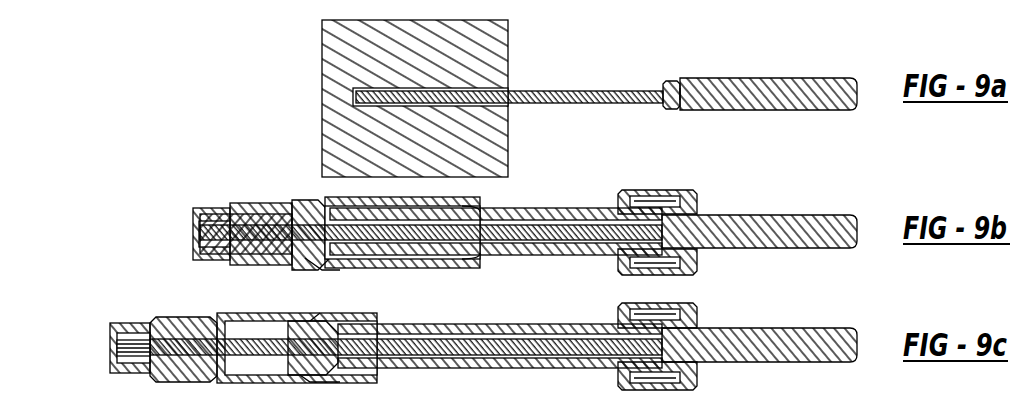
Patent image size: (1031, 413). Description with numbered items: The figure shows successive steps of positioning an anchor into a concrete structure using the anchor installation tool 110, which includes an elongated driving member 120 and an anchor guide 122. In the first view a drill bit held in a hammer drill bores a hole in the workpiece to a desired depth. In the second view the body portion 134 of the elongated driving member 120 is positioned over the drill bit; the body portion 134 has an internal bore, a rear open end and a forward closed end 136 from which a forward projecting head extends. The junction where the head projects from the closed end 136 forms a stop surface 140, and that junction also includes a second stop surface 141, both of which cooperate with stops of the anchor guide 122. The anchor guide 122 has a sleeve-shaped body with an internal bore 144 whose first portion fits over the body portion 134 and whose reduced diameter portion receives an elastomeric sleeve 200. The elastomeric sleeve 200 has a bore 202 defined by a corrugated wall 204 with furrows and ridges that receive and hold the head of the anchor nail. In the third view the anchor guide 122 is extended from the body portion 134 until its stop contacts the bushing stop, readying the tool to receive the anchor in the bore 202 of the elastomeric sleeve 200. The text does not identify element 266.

In FIG. 9B, the anchor installation tool 110 is at (549, 184).
In FIG. 9C, the anchor installation tool 110 is at (505, 303).
In FIG. 9B, the elongated driving member 120 is at (598, 205).
In FIG. 9C, the elongated driving member 120 is at (569, 321).
In FIG. 9B, the anchor guide 122 is at (385, 196).
In FIG. 9C, the anchor guide 122 is at (216, 313).
In FIG. 9A, the body portion 134 is at (649, 67).
In FIG. 9B, the body portion 134 is at (765, 214).
In FIG. 9C, the body portion 134 is at (757, 328).
In FIG. 9B, the forward closed end 136 is at (295, 222).
In FIG. 9C, the forward closed end 136 is at (302, 322).
In FIG. 9B, the stop surface 140 is at (292, 264).
In FIG. 9C, the stop surface 140 is at (305, 383).
In FIG. 9B, the second stop surface 141 is at (323, 259).
In FIG. 9C, the second stop surface 141 is at (333, 378).
In FIG. 9B, the internal bore 144 is at (332, 208).
In FIG. 9C, the elastomeric sleeve 200 is at (183, 333).
In FIG. 9C, the bore of the elastomeric sleeve 202 is at (172, 370).
In FIG. 9C, the corrugated wall 204 is at (150, 348).
In FIG. 9B, the sleeve end 266 is at (468, 209).